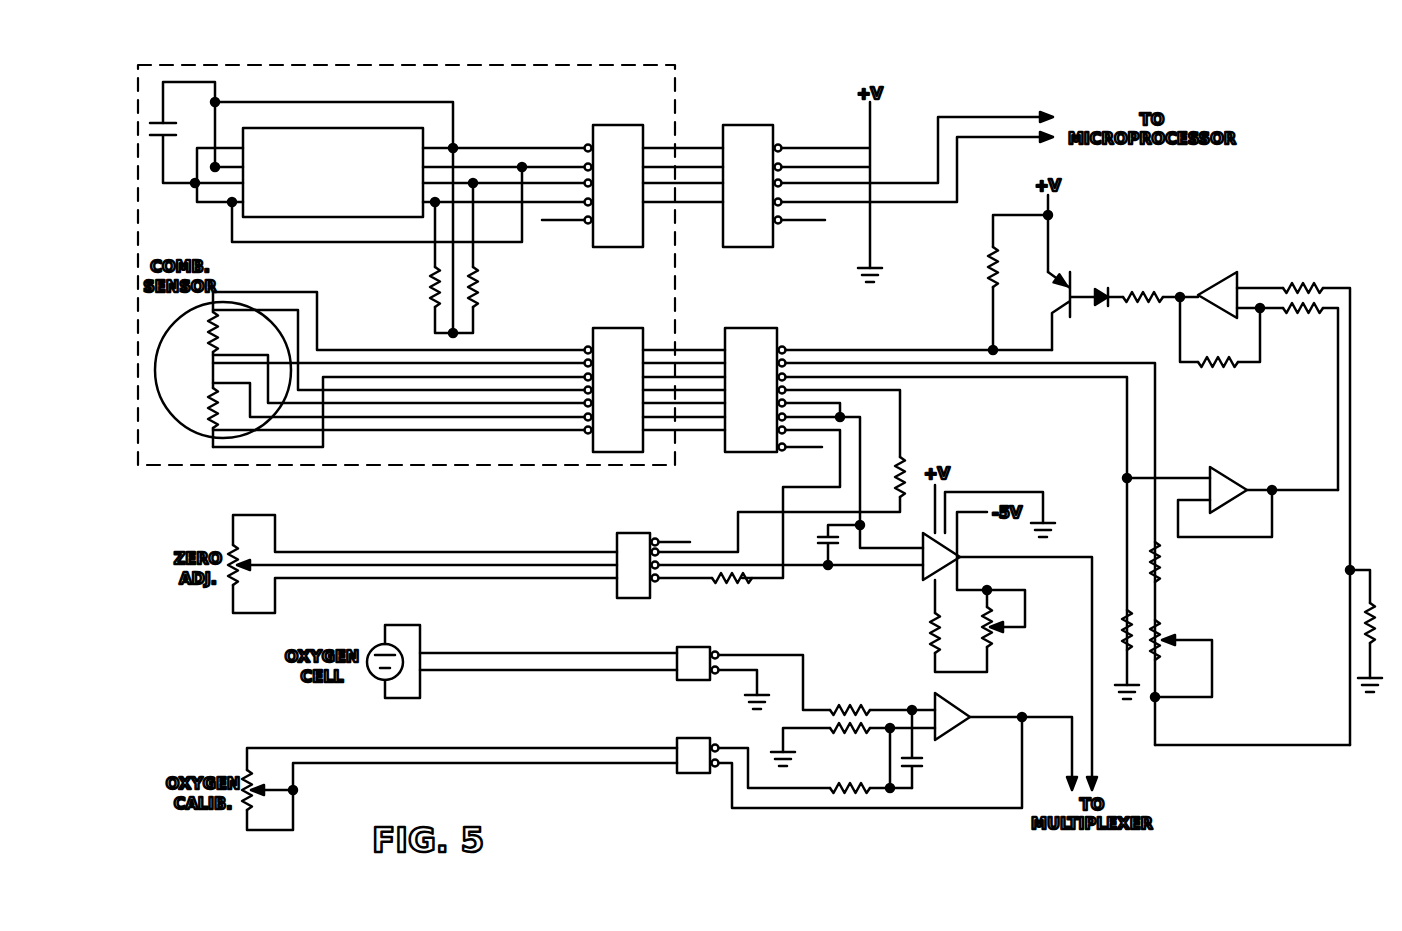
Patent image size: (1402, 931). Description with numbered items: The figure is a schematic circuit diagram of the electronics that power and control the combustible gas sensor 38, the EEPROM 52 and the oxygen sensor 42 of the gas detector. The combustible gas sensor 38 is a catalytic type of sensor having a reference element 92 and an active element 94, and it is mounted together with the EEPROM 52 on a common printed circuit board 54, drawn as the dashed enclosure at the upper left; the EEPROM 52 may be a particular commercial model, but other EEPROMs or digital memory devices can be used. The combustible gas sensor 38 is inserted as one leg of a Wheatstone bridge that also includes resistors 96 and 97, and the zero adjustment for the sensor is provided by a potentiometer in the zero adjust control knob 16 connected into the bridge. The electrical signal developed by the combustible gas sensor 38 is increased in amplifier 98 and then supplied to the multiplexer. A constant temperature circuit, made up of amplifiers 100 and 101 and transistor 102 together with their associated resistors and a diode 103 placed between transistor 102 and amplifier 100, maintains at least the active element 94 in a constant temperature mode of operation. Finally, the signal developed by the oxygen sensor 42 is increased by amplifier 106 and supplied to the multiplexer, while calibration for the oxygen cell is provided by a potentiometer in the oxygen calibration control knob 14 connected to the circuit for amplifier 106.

The printed circuit board 54 is at (622, 63).
The EEPROM 52 is at (372, 127).
The combustible gas sensor 38 is at (198, 437).
The reference element 92 is at (211, 337).
The active element 94 is at (211, 409).
The resistor 96 is at (915, 452).
The resistor 97 is at (745, 585).
The amplifier 98 is at (920, 563).
The amplifier 100 is at (1256, 268).
The amplifier 101 is at (1238, 480).
The transistor 102 is at (1068, 278).
The diode 103 is at (1110, 292).
The amplifier 106 is at (984, 704).
The zero adjust control knob 16 is at (232, 586).
The oxygen sensor 42 is at (378, 679).
The oxygen calibration control knob 14 is at (247, 812).